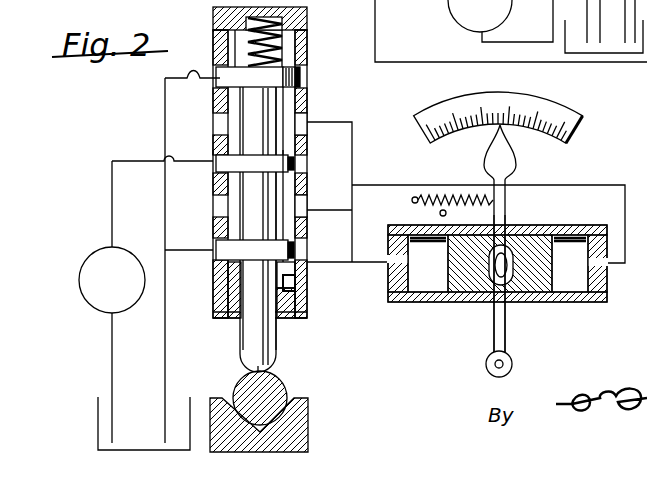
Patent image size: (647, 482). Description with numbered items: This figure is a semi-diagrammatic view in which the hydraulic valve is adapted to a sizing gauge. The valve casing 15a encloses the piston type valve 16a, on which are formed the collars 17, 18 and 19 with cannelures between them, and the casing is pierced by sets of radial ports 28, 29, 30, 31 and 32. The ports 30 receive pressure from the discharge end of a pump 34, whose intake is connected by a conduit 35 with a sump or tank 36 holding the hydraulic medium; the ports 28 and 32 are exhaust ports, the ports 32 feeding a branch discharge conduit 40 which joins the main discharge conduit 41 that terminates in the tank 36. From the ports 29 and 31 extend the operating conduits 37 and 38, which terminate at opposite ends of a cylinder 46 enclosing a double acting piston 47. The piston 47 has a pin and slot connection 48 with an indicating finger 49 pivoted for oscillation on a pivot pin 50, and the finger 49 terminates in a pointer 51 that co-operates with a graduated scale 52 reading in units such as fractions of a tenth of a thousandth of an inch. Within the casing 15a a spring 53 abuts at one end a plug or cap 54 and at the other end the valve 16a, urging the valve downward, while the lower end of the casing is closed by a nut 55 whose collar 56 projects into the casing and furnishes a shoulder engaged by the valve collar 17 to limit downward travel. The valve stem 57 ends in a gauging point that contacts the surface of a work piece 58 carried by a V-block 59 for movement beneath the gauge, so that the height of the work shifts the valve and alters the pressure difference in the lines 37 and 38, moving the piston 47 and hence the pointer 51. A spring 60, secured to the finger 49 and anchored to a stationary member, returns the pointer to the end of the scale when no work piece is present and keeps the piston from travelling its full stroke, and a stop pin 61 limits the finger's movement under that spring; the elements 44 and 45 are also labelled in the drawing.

The casing 15a is at (307, 51).
The valve 16a is at (303, 95).
The valve collar 17 is at (300, 241).
The collar 18 is at (215, 153).
The collar 19 is at (213, 69).
The radial ports 28 is at (303, 252).
The radial ports 29 is at (303, 204).
The radial ports 30 is at (307, 167).
The radial ports 31 is at (332, 122).
The radial ports 32 is at (303, 117).
The pump 34 is at (101, 251).
The conduit 35 is at (112, 348).
The sump or tank 36 is at (98, 421).
The operating conduit 37 is at (356, 211).
The operating conduit 38 is at (394, 185).
The branch discharge conduit 40 is at (192, 257).
The main discharge conduit 41 is at (162, 263).
The contact 44 is at (295, 240).
The contact 45 is at (286, 157).
The cylinder 46 is at (568, 303).
The double acting piston 47 is at (535, 303).
The pin and slot connection 48 is at (470, 303).
The indicating finger 49 is at (508, 216).
The pivot pin 50 is at (486, 365).
The pointer 51 is at (506, 143).
The scale 52 is at (582, 120).
The spring 53 is at (240, 75).
The plug or cap 54 is at (222, 10).
The nut 55 is at (278, 320).
The collar 56 is at (283, 283).
The valve stem 57 is at (270, 361).
The work piece 58 is at (272, 391).
The V-block 59 is at (303, 413).
The spring 60 is at (457, 197).
The stop pin 61 is at (440, 214).